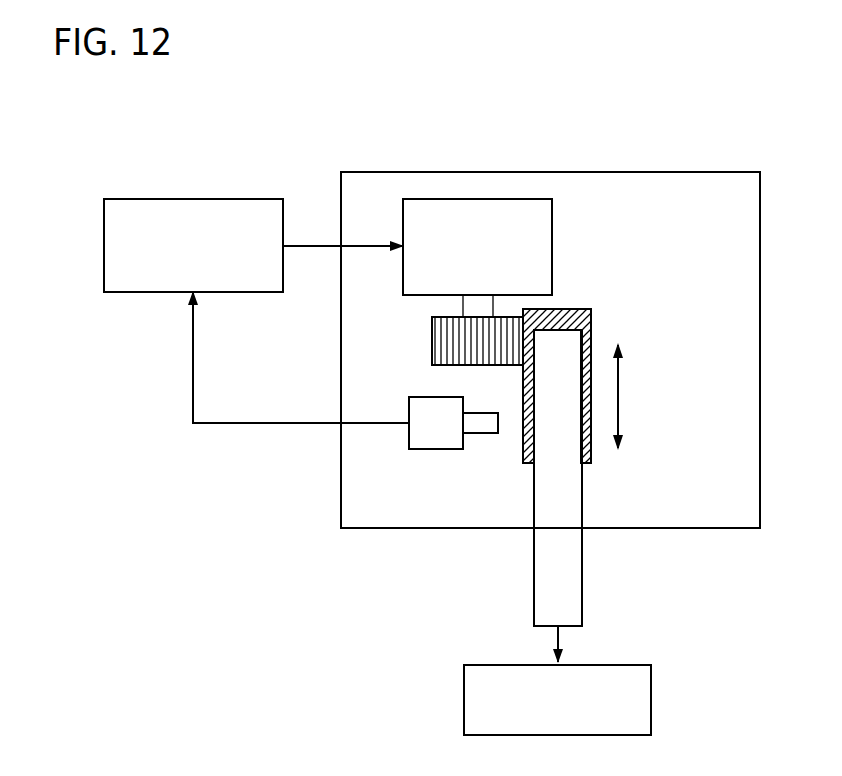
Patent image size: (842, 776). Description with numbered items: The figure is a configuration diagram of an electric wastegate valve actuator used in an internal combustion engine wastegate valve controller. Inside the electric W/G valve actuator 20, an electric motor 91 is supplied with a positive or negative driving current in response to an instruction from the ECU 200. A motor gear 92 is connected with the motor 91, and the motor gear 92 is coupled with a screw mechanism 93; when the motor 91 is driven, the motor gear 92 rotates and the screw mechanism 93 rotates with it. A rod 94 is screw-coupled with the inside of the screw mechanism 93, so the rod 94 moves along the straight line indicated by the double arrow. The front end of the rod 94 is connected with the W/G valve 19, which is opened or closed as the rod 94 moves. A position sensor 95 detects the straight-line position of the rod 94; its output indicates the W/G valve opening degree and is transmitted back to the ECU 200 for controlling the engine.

The ECU 200 is at (193, 199).
The electric W/G valve actuator 20 is at (552, 172).
The electric motor 91 is at (552, 244).
The motor gear 92 is at (443, 335).
The screw mechanism 93 is at (558, 308).
The rod 94 is at (583, 513).
The position sensor 95 is at (435, 450).
The W/G valve 19 is at (651, 698).